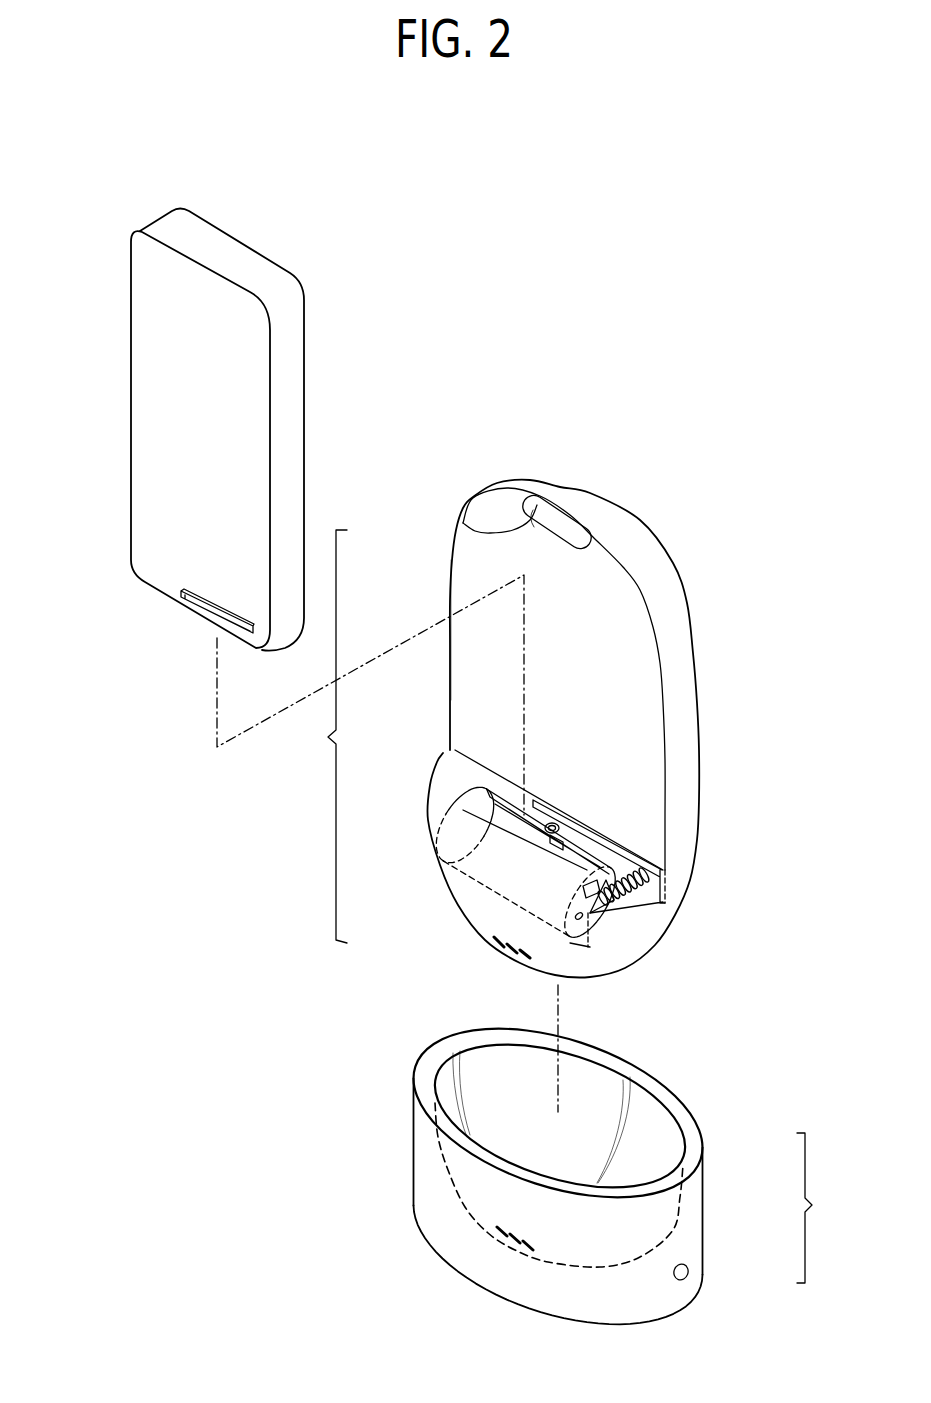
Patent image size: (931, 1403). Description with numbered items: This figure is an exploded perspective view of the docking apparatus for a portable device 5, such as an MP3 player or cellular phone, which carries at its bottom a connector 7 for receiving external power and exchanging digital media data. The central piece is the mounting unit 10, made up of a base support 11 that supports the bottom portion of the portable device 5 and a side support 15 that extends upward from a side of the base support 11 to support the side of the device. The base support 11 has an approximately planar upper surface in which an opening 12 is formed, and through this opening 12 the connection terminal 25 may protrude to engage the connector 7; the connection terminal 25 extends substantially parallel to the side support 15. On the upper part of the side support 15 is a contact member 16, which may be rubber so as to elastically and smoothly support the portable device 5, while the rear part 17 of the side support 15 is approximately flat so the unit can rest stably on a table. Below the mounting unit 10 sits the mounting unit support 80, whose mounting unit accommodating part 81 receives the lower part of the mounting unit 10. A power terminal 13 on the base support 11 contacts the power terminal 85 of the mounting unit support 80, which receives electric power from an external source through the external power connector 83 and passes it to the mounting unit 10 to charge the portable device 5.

The portable device 5 is at (131, 363).
The connector 7 is at (188, 612).
The mounting unit 10 is at (323, 736).
The base support 11 is at (453, 770).
The opening 12 is at (498, 828).
The power terminal 13 is at (496, 940).
The side support 15 is at (470, 589).
The contact member 16 is at (490, 531).
The rear part 17 is at (690, 672).
The connection terminal 25 is at (667, 848).
The mounting unit support 80 is at (616, 1160).
The mounting unit accommodating part 81 is at (702, 1128).
The external power connector 83 is at (690, 1270).
The power terminal 85 is at (527, 1247).